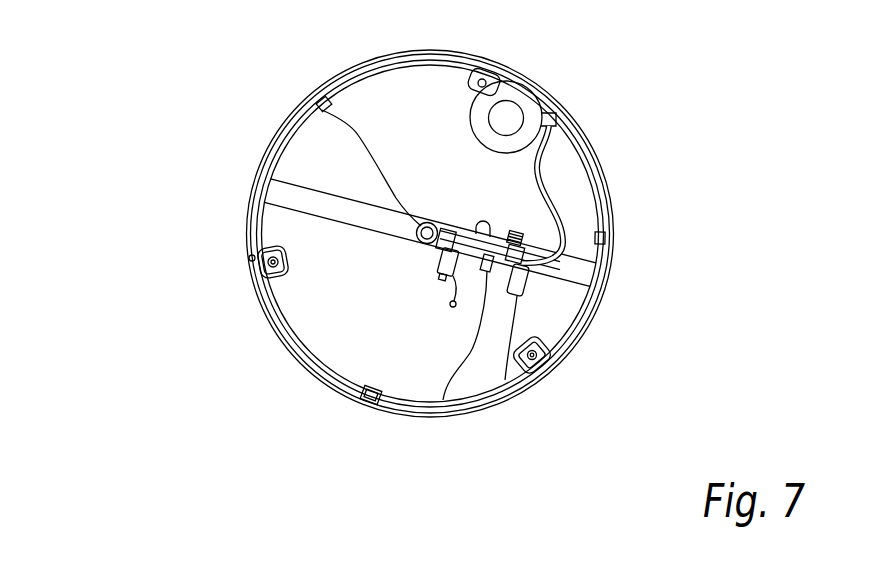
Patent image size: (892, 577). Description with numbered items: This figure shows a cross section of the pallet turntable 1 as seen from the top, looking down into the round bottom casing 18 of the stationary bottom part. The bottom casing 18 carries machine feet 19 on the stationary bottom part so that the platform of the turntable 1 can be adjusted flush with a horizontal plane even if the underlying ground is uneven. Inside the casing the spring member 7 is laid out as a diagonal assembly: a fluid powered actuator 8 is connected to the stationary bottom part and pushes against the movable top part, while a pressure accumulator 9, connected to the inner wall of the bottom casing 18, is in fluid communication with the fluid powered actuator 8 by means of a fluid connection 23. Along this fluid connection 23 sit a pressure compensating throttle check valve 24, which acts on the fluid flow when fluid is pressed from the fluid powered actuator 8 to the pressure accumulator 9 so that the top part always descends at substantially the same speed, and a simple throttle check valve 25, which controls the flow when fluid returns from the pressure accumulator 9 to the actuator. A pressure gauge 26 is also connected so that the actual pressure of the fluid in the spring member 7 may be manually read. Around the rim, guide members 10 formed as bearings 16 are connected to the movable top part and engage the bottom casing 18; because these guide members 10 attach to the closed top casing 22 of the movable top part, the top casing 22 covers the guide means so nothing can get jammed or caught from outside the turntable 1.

The pallet turntable 1 is at (112, 84).
The spring member 7 is at (594, 225).
The fluid powered actuator 8 is at (322, 110).
The pressure accumulator 9 is at (507, 112).
The guide members 10 is at (362, 405).
The bearings 16 is at (371, 395).
The bottom casing 18 is at (588, 141).
The machine feet 19 is at (263, 285).
The top casing 22 is at (538, 106).
The fluid connection 23 is at (541, 172).
The pressure compensating throttle check valve 24 is at (443, 400).
The throttle check valve 25 is at (505, 380).
The pressure gauge 26 is at (533, 297).